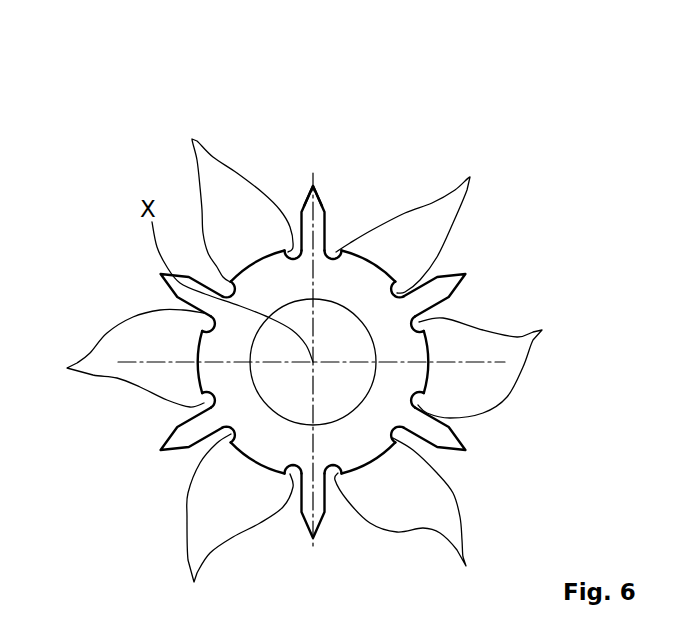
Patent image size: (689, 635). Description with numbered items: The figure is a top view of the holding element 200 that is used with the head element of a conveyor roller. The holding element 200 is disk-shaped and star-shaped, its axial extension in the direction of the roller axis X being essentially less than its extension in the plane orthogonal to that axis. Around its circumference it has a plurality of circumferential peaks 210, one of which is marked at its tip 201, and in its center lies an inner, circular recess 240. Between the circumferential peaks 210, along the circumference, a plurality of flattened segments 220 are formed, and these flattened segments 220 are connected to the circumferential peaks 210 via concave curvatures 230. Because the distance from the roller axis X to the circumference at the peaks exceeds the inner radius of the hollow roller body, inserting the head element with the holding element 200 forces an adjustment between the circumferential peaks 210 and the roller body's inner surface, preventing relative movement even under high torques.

The holding element 200 is at (527, 127).
The apex of spoke 201 is at (313, 187).
The circumferential peaks 210 is at (326, 208).
The flattened segments 220 is at (260, 260).
The concave curvatures 230 is at (196, 132).
The inner circular recess 240 is at (363, 352).